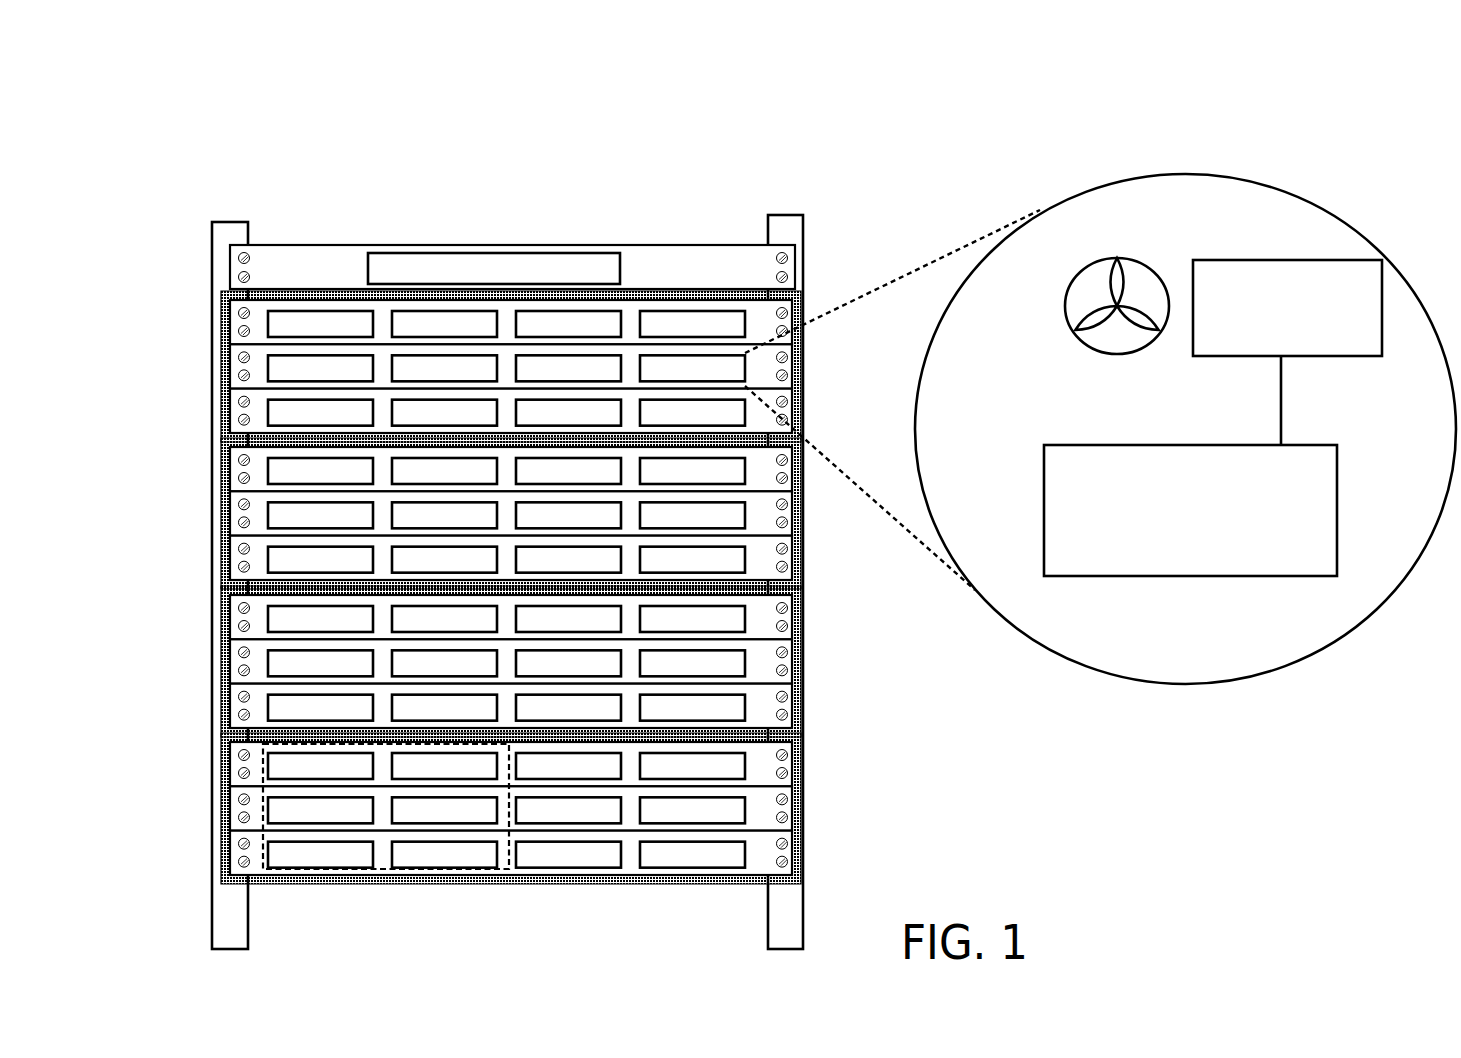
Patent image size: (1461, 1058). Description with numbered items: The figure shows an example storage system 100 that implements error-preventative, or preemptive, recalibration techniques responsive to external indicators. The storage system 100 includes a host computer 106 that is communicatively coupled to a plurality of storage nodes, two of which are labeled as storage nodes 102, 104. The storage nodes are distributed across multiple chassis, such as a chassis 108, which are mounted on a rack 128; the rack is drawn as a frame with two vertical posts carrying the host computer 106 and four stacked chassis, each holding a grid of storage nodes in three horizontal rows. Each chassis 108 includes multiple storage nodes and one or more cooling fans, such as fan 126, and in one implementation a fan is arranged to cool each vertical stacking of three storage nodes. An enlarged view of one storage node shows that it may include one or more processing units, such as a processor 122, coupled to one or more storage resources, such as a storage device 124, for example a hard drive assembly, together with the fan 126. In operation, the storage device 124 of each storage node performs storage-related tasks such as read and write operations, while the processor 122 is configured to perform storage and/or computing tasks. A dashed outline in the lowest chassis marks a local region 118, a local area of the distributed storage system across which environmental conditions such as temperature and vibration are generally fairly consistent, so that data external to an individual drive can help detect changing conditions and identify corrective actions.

The storage system 100 is at (236, 118).
The storage node 102 is at (267, 322).
The storage node 104 is at (267, 367).
The host computer 106 is at (368, 265).
The chassis 108 is at (217, 443).
The local region 118 is at (263, 786).
The processor 122 is at (1290, 260).
The storage device 124 is at (1045, 503).
The fan 126 is at (1066, 321).
The rack 128 is at (213, 222).